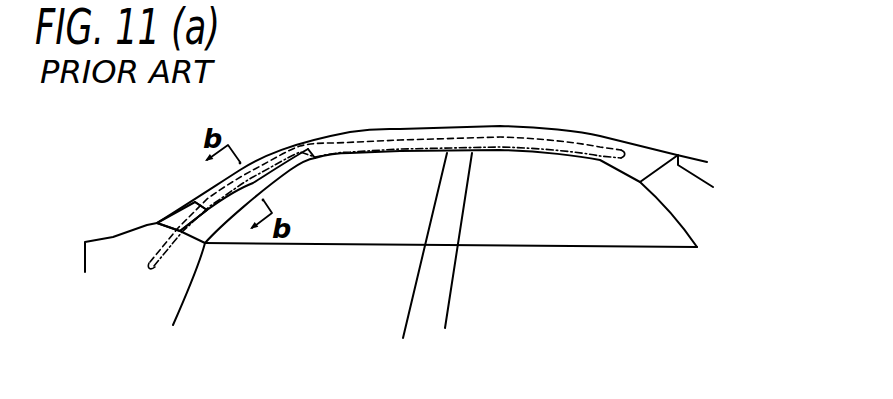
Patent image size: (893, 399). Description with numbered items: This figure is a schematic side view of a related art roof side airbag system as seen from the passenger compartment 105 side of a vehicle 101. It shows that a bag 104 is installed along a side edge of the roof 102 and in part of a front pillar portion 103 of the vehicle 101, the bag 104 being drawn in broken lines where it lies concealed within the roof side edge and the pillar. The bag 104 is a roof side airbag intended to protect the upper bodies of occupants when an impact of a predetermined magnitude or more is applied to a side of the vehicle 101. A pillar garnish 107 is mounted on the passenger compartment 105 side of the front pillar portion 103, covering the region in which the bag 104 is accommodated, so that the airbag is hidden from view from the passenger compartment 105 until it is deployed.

The vehicle 101 is at (657, 144).
The roof 102 is at (382, 130).
The front pillar portion 103 is at (177, 215).
The bag 104 is at (428, 136).
The passenger compartment 105 is at (660, 289).
The pillar garnish 107 is at (195, 202).